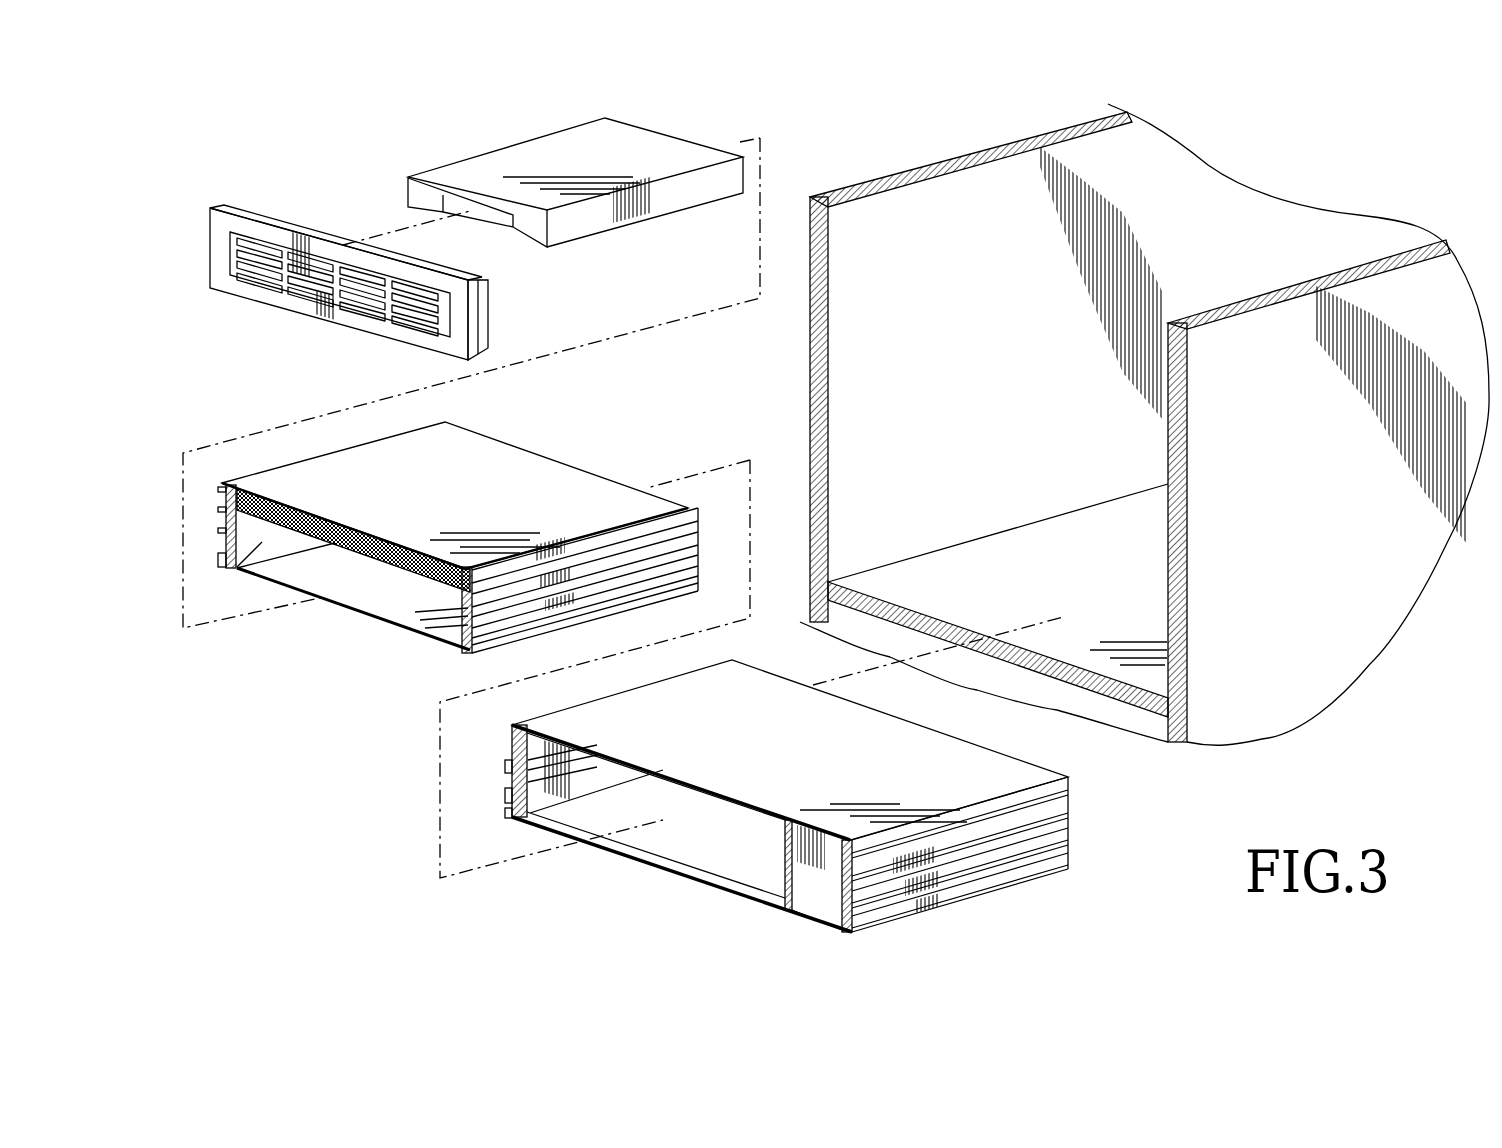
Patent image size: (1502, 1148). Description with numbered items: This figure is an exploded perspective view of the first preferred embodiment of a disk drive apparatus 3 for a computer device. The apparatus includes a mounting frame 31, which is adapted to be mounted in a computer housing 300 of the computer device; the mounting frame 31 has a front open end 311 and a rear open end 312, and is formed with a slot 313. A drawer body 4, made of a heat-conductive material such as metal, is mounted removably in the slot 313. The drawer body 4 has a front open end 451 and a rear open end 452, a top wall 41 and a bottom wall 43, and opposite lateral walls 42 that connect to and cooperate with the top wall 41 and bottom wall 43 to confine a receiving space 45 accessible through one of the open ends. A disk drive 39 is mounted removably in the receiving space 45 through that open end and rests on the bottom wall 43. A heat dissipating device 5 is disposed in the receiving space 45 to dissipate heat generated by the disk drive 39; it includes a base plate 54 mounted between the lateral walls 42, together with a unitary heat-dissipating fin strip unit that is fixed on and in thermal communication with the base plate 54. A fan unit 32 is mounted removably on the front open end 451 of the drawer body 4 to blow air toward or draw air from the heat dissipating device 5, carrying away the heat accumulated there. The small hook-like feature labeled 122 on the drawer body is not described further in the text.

The disk drive apparatus 3 is at (790, 160).
The computer housing 300 is at (902, 170).
The disk drive 39 is at (495, 173).
The fan unit 32 is at (460, 317).
The drawer body 4 is at (450, 551).
The top wall 41 is at (515, 457).
The lateral walls 42 is at (228, 522).
The heat dissipating device 5 is at (388, 580).
The base plate 54 is at (382, 568).
The bottom wall 43 is at (386, 582).
The hook 122 is at (237, 568).
The receiving space 45 is at (433, 615).
The front open end 451 is at (400, 614).
The rear open end 452 is at (573, 462).
The mounting frame 31 is at (809, 796).
The front open end 311 is at (660, 843).
The rear open end 312 is at (990, 747).
The slot 313 is at (732, 823).